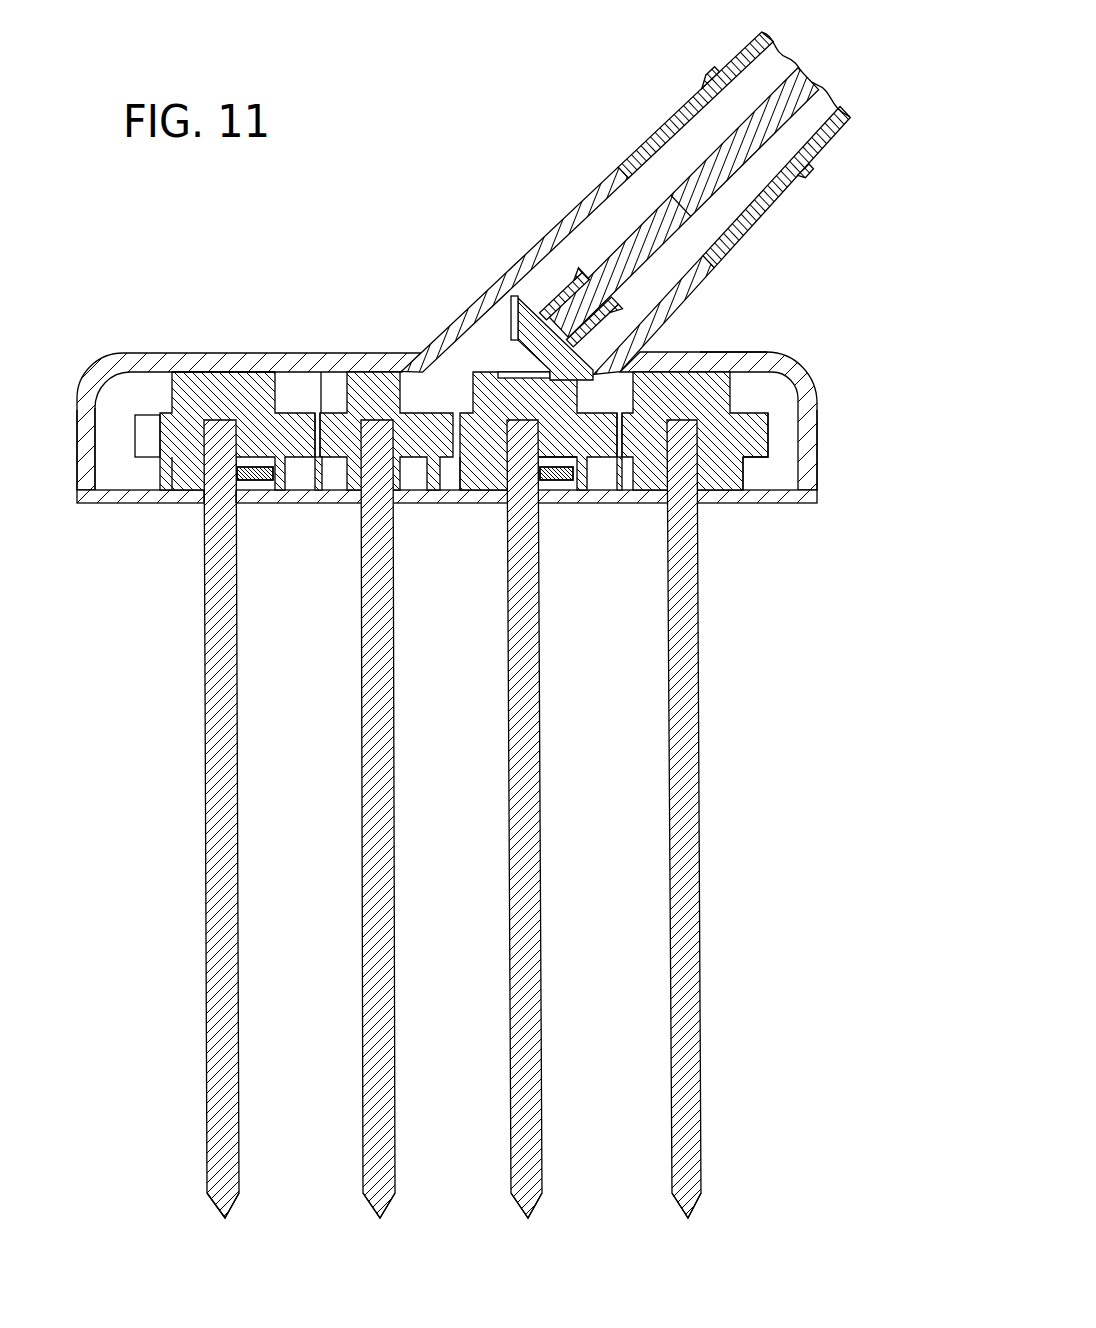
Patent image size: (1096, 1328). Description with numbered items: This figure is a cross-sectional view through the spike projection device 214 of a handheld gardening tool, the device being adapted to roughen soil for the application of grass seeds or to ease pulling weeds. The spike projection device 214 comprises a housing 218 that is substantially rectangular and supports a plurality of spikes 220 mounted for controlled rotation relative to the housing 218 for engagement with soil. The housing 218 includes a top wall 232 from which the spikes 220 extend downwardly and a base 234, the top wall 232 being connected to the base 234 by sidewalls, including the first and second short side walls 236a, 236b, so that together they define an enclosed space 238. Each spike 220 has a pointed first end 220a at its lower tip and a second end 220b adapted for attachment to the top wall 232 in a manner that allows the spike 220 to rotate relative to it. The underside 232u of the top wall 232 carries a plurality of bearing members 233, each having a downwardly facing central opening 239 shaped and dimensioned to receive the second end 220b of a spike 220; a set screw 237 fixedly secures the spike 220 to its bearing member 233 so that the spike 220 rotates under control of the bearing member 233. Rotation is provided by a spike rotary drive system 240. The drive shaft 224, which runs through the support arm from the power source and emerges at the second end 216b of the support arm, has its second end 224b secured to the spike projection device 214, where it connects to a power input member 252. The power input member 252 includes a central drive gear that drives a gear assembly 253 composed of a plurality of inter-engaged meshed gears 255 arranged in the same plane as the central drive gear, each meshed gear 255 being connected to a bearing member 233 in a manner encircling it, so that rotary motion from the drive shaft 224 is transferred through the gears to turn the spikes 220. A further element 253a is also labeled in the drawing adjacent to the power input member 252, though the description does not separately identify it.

The spikes 220 is at (224, 848).
The pointed first end 220a is at (213, 1198).
The second end 220b is at (205, 512).
The spike projection device 214 is at (280, 352).
The housing 218 is at (195, 352).
The top wall 232 is at (345, 352).
The underside of the top wall 232u is at (746, 379).
The drive shaft 224 is at (693, 183).
The second end of the drive shaft 224b is at (620, 292).
The second end of the support arm 216b is at (823, 152).
The power input member 252 is at (540, 370).
The retention plate 253a is at (508, 315).
The gear assembly 253 is at (783, 476).
The inter-engaged meshed gears 255 is at (318, 448).
The bearing member 233 is at (556, 483).
The set screw 237 is at (264, 483).
The central opening 239 is at (538, 472).
The first short side wall 236a is at (77, 450).
The second short side wall 236b is at (818, 427).
The base 234 is at (145, 503).
The enclosed space 238 is at (108, 408).
The spike rotary drive system 240 is at (434, 376).